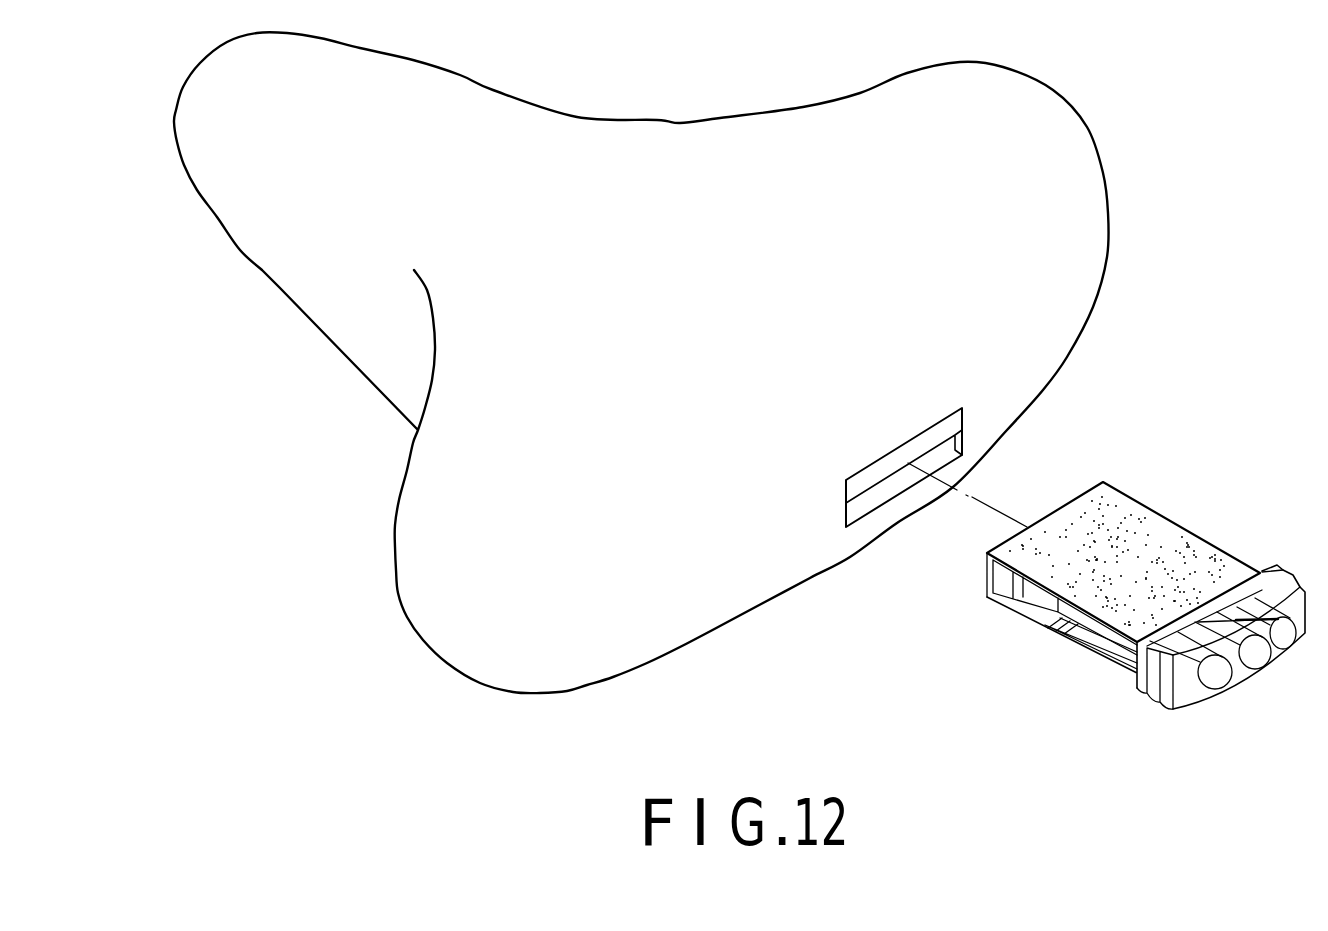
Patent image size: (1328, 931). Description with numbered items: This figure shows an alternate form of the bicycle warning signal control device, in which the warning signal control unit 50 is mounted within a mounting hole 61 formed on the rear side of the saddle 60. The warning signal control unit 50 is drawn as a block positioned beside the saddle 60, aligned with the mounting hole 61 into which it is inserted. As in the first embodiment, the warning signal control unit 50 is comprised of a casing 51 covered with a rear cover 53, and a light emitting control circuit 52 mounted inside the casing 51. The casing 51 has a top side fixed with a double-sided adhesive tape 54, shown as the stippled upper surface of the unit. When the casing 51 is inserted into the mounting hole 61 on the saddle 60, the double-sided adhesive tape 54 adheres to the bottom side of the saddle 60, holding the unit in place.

The warning signal control unit 50 is at (1091, 619).
The casing 51 is at (1118, 668).
The light emitting control circuit 52 is at (1087, 615).
The rear cover 53 is at (1000, 578).
The double-sided adhesive tape 54 is at (1060, 558).
The saddle 60 is at (1066, 366).
The mounting hole 61 is at (943, 445).